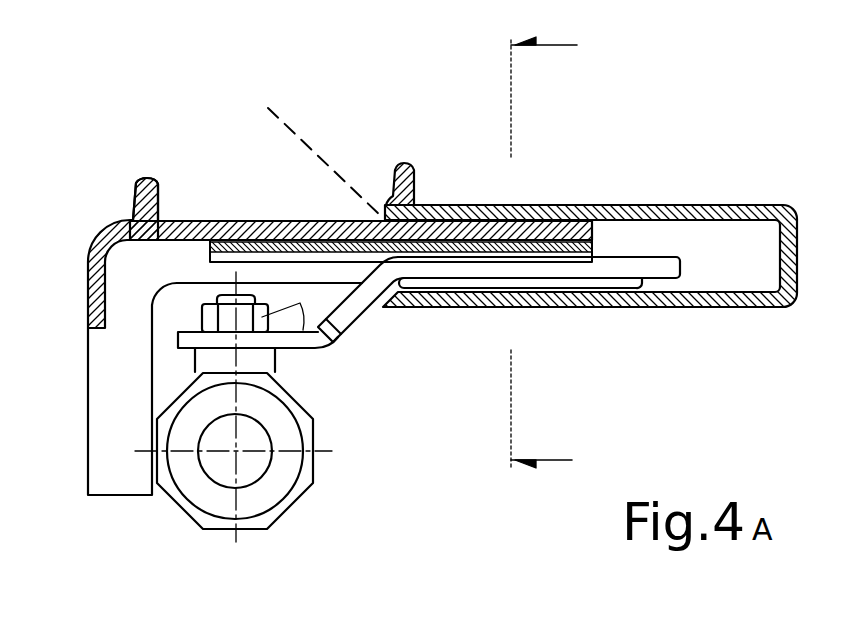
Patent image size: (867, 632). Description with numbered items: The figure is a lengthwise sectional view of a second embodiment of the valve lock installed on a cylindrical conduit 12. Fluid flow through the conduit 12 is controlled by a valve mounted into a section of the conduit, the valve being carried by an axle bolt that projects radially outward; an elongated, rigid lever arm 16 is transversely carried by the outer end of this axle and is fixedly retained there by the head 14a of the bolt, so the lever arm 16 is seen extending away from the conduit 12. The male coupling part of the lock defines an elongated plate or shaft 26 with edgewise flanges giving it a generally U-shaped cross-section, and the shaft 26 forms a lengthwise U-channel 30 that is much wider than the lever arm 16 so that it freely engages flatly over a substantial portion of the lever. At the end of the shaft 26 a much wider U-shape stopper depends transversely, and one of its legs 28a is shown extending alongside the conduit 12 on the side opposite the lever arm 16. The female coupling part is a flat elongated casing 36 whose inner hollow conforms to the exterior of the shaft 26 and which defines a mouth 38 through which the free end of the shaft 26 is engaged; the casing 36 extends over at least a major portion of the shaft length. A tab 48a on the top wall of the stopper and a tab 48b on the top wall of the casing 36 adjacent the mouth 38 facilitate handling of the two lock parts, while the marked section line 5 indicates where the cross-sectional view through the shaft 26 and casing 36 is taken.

The section line 5- 5 is at (554, 254).
The cylindrical conduit 12 is at (315, 442).
The head of bolt 14a is at (332, 343).
The lever arm 16 is at (648, 268).
The shaft 26 is at (533, 205).
The leg of stopper 28a is at (113, 480).
The U-channel 30 is at (300, 631).
The casing 36 is at (686, 205).
The mouth 38 is at (314, 147).
The tab 48a is at (145, 176).
The tab 48b is at (397, 177).